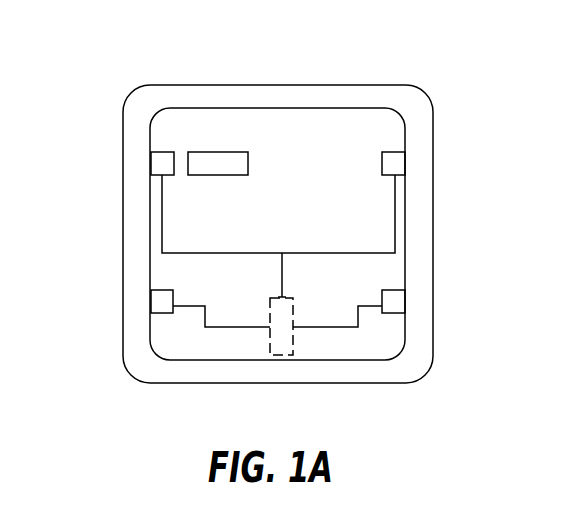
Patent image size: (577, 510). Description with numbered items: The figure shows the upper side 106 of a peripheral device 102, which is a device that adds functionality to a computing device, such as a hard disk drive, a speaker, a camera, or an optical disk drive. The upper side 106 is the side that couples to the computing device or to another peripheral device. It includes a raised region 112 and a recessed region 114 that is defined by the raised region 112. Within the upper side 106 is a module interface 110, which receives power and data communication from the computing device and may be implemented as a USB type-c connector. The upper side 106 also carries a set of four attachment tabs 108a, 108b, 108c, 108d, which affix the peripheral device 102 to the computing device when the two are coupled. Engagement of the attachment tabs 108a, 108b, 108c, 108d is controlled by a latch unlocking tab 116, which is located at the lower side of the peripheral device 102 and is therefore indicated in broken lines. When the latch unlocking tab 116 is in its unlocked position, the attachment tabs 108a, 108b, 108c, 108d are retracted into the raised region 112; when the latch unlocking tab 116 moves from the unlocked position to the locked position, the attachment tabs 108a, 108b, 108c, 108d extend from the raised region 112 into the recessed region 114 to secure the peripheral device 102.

The peripheral device 102 is at (368, 64).
The upper side 106 is at (454, 68).
The attachment tab 108a is at (395, 152).
The attachment tab 108b is at (388, 290).
The attachment tab 108c is at (160, 150).
The attachment tab 108d is at (162, 290).
The module interface 110 is at (225, 152).
The raised region 112 is at (433, 107).
The recessed region 114 is at (178, 107).
The latch unlocking tab 116 is at (293, 333).